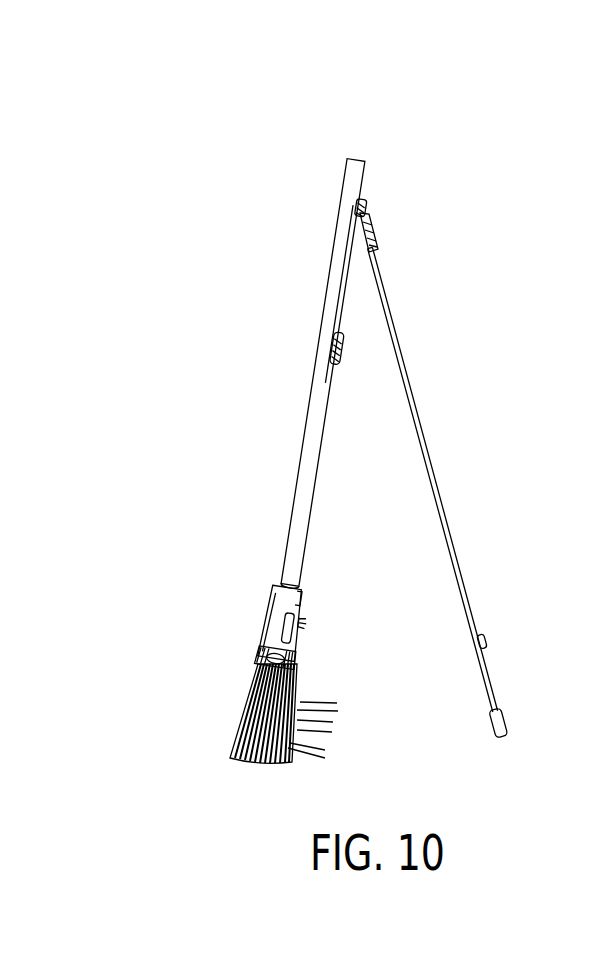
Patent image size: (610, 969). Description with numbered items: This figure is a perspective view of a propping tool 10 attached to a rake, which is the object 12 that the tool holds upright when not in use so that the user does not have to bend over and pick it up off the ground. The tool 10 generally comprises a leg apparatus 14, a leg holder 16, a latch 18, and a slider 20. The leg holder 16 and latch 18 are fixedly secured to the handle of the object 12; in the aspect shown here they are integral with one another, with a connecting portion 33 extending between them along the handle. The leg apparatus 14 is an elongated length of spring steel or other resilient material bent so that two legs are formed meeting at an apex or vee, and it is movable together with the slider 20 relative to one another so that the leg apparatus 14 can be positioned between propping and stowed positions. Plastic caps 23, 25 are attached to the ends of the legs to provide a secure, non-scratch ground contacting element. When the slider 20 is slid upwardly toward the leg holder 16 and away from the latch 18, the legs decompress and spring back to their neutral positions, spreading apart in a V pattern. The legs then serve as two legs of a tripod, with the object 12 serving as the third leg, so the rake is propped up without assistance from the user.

The tool 10 is at (450, 370).
The object 12 is at (300, 482).
The leg apparatus 14 is at (466, 503).
The leg holder 16 is at (366, 210).
The latch 18 is at (336, 350).
The slider 20 is at (374, 248).
The plastic cap 23 is at (492, 723).
The plastic cap 25 is at (488, 640).
The connecting portion 33 is at (340, 302).